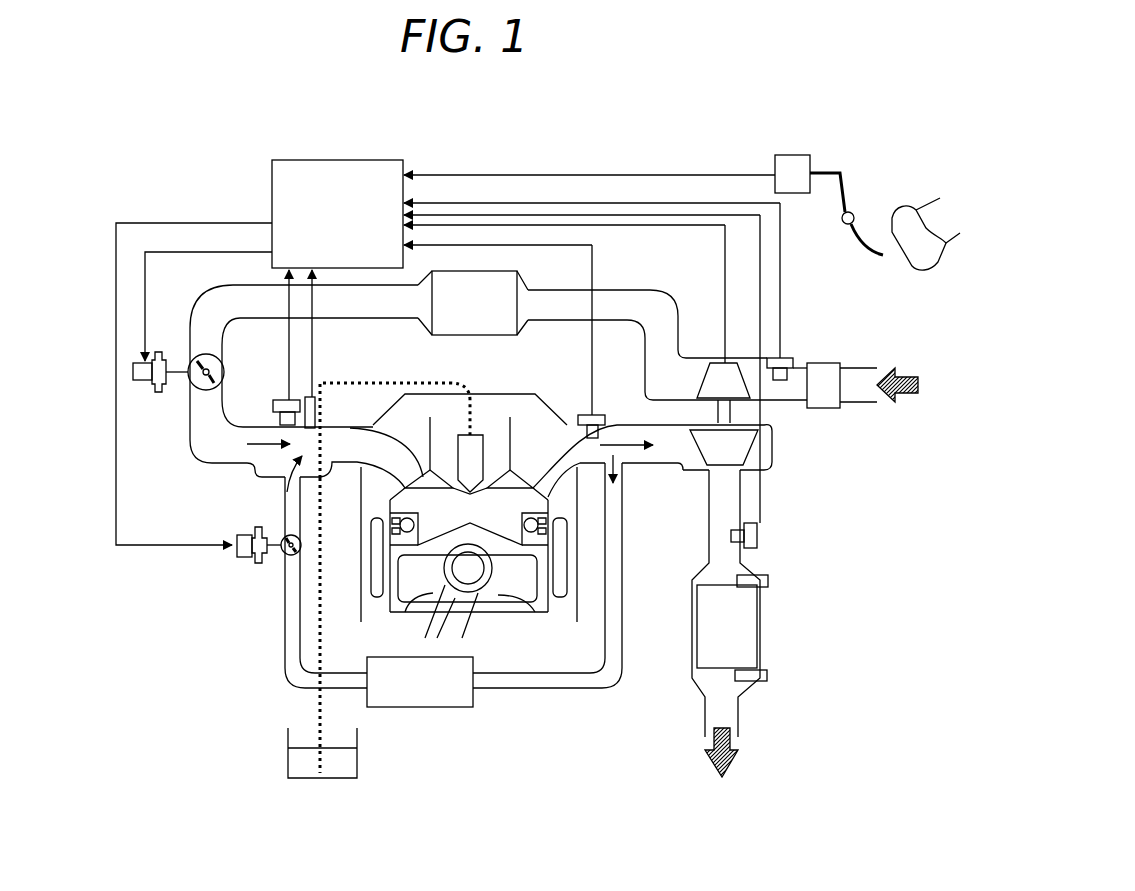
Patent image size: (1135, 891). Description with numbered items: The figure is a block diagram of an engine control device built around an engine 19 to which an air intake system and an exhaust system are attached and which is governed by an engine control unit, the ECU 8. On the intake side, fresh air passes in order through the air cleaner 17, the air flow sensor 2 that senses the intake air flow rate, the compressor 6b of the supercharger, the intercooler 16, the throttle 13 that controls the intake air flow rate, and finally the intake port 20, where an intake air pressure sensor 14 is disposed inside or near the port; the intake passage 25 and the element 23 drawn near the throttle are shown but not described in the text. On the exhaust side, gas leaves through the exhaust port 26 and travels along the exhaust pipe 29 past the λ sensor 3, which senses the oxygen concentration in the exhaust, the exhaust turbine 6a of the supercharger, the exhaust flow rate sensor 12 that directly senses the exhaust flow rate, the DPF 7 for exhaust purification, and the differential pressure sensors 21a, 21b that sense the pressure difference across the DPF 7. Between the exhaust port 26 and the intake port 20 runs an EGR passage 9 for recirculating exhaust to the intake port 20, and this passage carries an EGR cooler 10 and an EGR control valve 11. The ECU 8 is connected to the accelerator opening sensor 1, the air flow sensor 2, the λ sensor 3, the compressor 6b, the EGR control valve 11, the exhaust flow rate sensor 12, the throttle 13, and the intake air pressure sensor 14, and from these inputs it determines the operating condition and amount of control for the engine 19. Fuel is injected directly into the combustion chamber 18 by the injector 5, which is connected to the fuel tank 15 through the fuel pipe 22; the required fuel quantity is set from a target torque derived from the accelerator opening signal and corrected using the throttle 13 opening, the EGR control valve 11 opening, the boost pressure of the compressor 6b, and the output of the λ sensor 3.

The accelerator opening sensor 1 is at (795, 158).
The air flow sensor 2 is at (797, 350).
The λ sensor 3 is at (600, 415).
The fuel injection valve 5 is at (483, 440).
The exhaust turbine 6a is at (743, 448).
The compressor 6b is at (723, 372).
The DPF 7 is at (708, 643).
The ECU 8 is at (280, 195).
The EGR passage 9 is at (548, 690).
The EGR cooler 10 is at (427, 693).
The EGR control valve 11 is at (247, 562).
The exhaust flow rate sensor 12 is at (757, 540).
The throttle 13 is at (135, 372).
The intake air pressure sensor 14 is at (280, 397).
The fuel tank 15 is at (307, 733).
The intercooler 16 is at (508, 290).
The air cleaner 17 is at (833, 392).
The combustion chamber 18 is at (533, 505).
The engine 19 is at (528, 542).
The intake port 20 is at (360, 453).
The differential pressure sensor 21a is at (767, 577).
The differential pressure sensor 21b is at (765, 673).
The fuel pipe 22 is at (317, 700).
The fuel supply pipe to injector 23 is at (320, 387).
The intake passage 25 is at (203, 440).
The exhaust port 26 is at (553, 445).
The exhaust pipe 29 is at (708, 542).